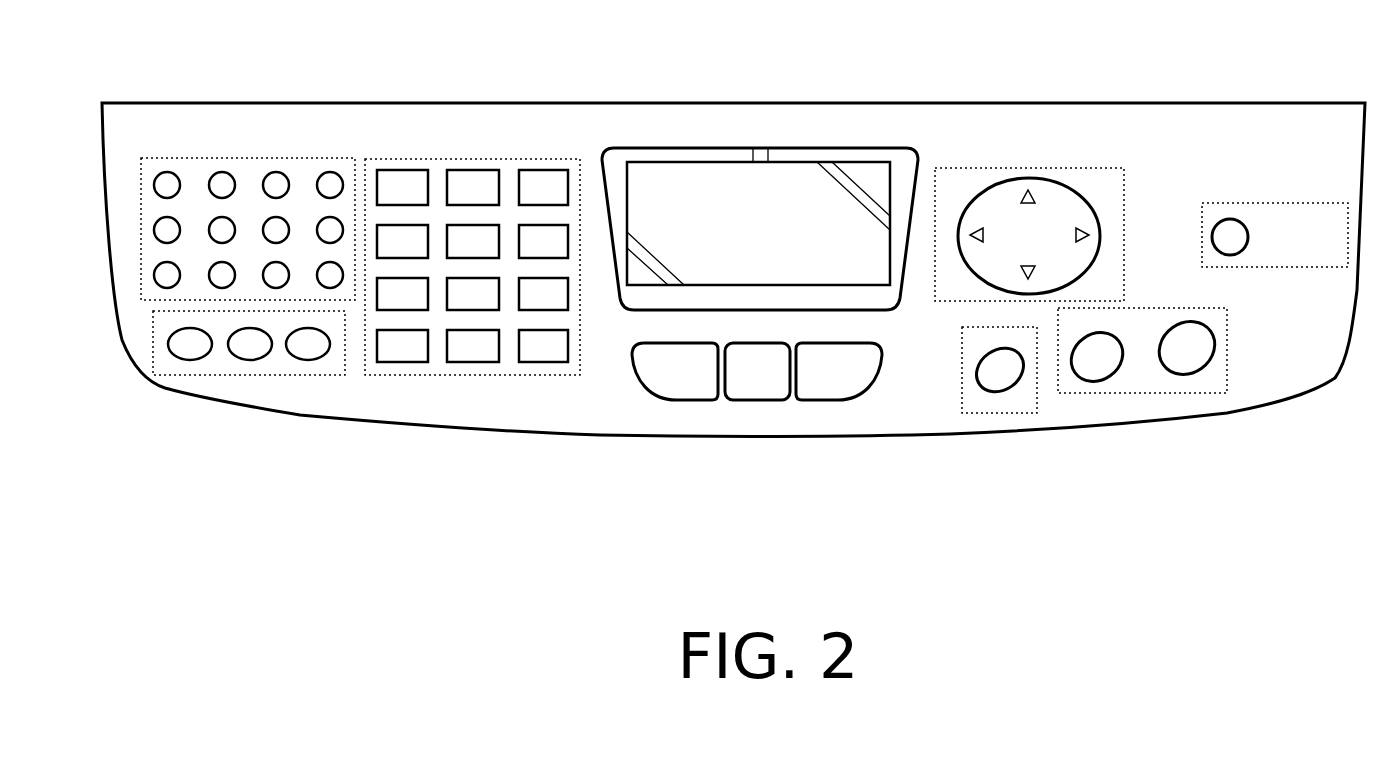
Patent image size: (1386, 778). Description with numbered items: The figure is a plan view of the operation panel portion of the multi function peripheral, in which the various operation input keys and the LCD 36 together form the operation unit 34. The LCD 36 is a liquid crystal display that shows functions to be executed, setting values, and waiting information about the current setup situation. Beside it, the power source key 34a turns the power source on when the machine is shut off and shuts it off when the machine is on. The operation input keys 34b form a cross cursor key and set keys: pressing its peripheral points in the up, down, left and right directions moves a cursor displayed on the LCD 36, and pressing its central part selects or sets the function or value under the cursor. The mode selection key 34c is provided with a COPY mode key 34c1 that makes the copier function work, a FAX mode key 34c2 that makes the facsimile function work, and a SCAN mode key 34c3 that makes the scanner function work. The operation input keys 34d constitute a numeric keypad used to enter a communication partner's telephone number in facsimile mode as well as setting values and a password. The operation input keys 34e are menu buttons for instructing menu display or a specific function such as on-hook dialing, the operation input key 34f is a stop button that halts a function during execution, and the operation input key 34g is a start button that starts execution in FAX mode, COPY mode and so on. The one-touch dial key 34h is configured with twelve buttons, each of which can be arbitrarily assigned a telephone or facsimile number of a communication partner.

The operation unit 34 is at (1222, 452).
The power source key 34a is at (1297, 203).
The operation input keys (cross cursor key and set keys) 34b is at (1070, 168).
The mode selection key 34c is at (759, 431).
The COPY mode key 34c1 is at (673, 372).
The FAX mode key 34c2 is at (767, 387).
The SCAN mode key 34c3 is at (845, 407).
The operation input keys (numeric keypad) 34d is at (475, 375).
The operation input keys (menu buttons) 34e is at (245, 375).
The operation input key (stop button) 34f is at (1005, 413).
The operation input key (start button) 34g is at (1143, 393).
The one-touch dial key 34h is at (232, 158).
The LCD 36 is at (690, 160).